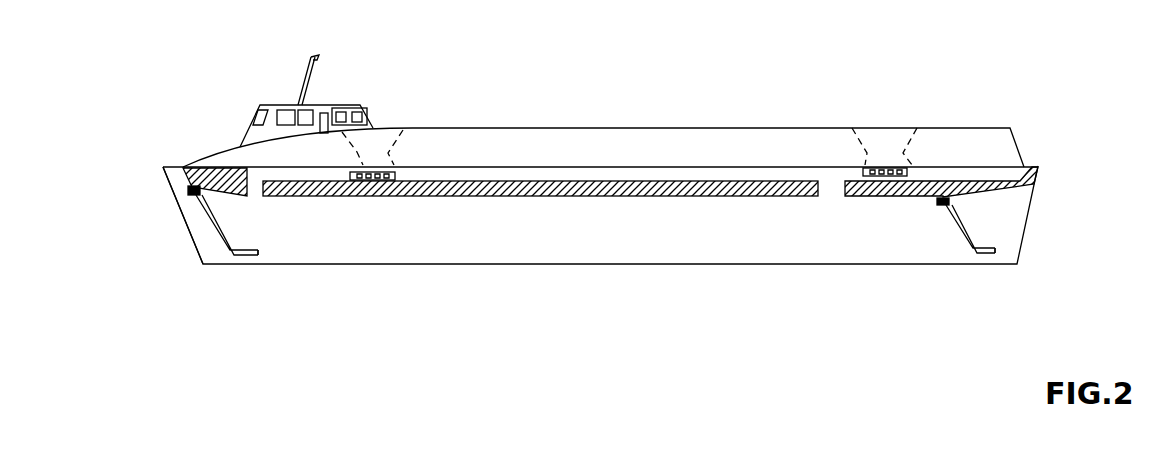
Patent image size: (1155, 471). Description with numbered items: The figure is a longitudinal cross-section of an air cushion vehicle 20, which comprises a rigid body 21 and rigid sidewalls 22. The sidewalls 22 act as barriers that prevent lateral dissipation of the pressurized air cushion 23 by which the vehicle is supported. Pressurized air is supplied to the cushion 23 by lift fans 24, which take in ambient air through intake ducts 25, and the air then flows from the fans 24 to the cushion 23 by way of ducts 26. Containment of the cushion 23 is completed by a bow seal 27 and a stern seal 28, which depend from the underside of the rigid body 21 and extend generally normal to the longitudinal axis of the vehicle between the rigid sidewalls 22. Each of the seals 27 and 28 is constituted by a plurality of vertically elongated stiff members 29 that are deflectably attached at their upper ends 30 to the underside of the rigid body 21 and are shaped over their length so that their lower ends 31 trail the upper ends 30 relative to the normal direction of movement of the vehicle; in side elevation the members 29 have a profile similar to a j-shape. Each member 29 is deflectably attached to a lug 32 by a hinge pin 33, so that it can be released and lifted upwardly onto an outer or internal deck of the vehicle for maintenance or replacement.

The air cushion vehicle 20 is at (256, 101).
The rigid body 21 is at (628, 160).
The rigid sidewalls 22 is at (183, 215).
The pressurized air cushion 23 is at (632, 241).
The lift fans 24 is at (396, 175).
The intake ducts 25 is at (379, 148).
The ducts 26 is at (312, 175).
The bow seal 27 is at (197, 233).
The stern seal 28 is at (948, 222).
The vertically elongated stiff members 29 is at (222, 257).
The upper ends 30 is at (203, 194).
The lower ends 31 is at (263, 258).
The lug 32 is at (190, 190).
The hinge pin 33 is at (203, 197).